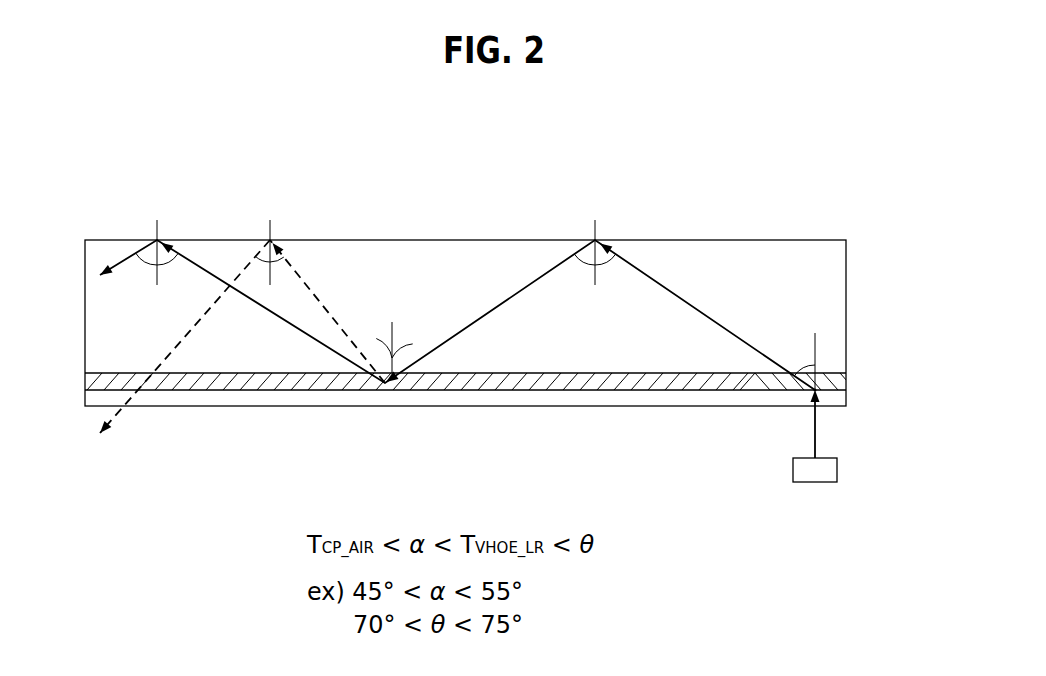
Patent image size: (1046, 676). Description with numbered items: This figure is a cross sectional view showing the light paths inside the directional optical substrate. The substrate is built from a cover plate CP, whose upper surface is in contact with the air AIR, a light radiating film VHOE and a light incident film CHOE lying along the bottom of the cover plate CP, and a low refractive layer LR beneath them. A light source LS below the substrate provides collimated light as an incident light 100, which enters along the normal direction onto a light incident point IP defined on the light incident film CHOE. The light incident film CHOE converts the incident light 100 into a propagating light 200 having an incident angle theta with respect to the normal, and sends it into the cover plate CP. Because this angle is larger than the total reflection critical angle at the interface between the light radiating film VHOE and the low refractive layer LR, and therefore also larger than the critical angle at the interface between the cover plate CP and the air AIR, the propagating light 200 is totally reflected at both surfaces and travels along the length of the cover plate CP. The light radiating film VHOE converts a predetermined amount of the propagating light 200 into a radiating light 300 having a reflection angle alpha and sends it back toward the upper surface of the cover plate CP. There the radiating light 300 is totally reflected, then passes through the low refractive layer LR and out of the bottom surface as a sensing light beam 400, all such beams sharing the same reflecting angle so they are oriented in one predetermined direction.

The incident light 100 is at (818, 430).
The propagating light 200 is at (119, 262).
The radiating light 300 is at (319, 293).
The sensing light beam 400 is at (186, 338).
The cover plate CP is at (792, 253).
The air AIR is at (632, 214).
The low refractive layer LR is at (565, 397).
The light radiating film VHOE is at (657, 388).
The light incident film CHOE is at (772, 396).
The light incident point IP is at (822, 391).
The light source LS is at (838, 474).